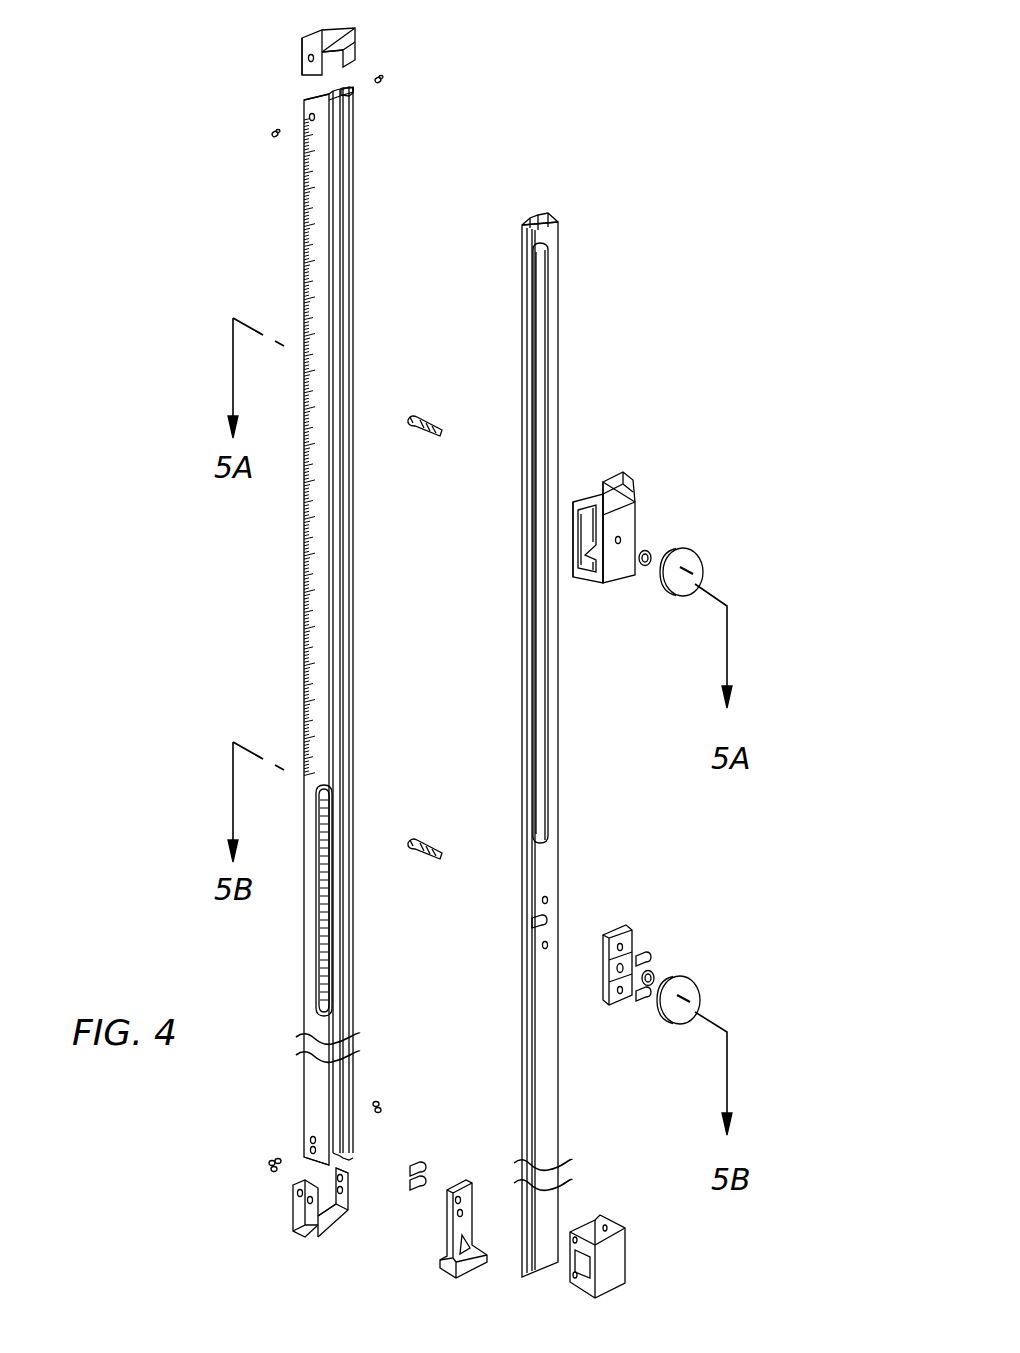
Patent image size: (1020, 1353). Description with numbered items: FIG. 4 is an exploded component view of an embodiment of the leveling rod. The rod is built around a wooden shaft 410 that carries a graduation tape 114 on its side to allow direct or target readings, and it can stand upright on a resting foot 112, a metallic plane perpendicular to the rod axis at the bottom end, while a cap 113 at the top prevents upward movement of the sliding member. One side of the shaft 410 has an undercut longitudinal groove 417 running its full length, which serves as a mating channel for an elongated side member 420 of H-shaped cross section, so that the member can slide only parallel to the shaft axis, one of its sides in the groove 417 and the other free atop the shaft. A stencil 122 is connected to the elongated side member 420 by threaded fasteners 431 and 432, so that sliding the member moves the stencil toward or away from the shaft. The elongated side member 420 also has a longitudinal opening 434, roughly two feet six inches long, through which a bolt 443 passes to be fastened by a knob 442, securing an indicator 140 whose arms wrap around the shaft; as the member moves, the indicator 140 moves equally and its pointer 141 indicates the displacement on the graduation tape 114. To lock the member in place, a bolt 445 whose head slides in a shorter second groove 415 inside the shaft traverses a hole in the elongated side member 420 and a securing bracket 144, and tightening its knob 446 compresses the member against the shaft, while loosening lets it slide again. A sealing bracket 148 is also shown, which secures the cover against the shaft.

The cap 113 is at (320, 40).
The wooden shaft 410 is at (312, 92).
The longitudinal groove 417 is at (335, 93).
The graduation tape 114 is at (304, 266).
The second groove 415 is at (316, 970).
The resting foot 112 is at (310, 1218).
The threaded fastener 431 is at (405, 1184).
The threaded fastener 432 is at (415, 1168).
The stencil 122 is at (466, 1190).
The elongated side member 420 is at (550, 215).
The longitudinal opening 434 is at (548, 278).
The bolt 443 is at (445, 436).
The bolt 445 is at (445, 860).
The indicator 140 is at (628, 512).
The pointer 141 is at (592, 515).
The knob 442 is at (705, 566).
The securing bracket 144 is at (630, 930).
The knob 446 is at (688, 994).
The sealing bracket 148 is at (618, 1248).